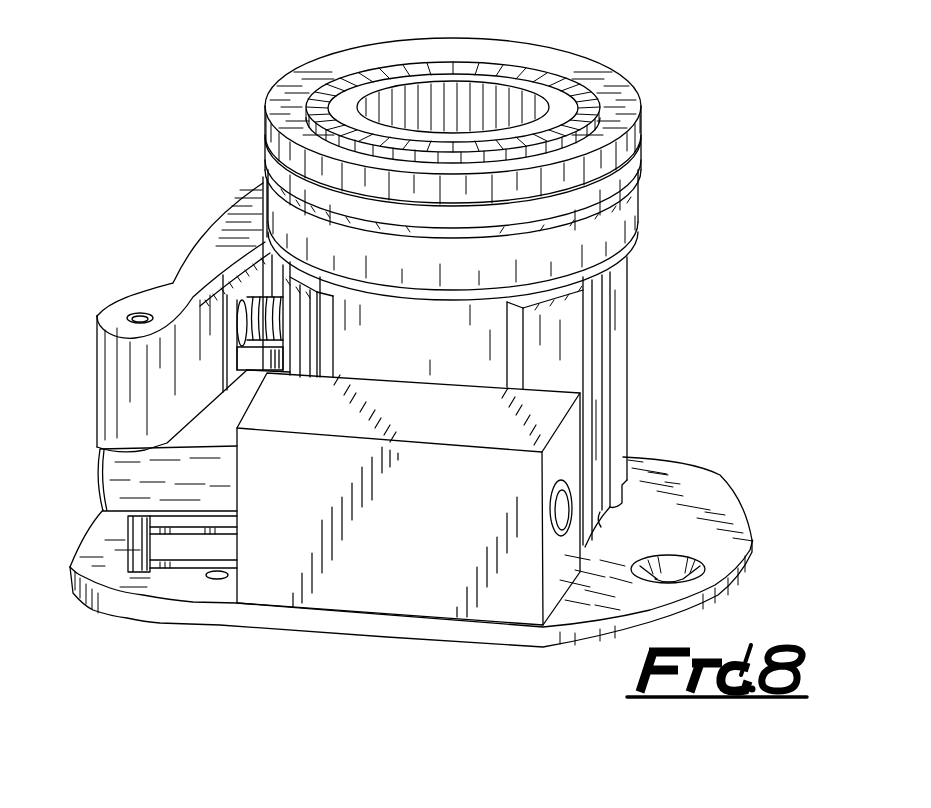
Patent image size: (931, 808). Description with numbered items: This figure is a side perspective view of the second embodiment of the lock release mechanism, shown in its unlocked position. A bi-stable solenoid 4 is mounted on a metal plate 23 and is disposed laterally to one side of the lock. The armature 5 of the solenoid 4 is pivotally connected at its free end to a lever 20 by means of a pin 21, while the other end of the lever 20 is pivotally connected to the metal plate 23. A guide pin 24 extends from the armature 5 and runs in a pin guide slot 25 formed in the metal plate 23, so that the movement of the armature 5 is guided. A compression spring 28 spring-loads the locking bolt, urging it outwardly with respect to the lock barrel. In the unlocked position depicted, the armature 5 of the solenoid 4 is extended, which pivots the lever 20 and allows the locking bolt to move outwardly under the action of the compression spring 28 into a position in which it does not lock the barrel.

The solenoid 4 is at (408, 533).
The armature 5 is at (147, 463).
The lever 20 is at (166, 317).
The pin 21 is at (107, 291).
The metal plate 23 is at (427, 524).
The guide pin 24 is at (111, 592).
The pin guide slot 25 is at (208, 628).
The compression spring 28 is at (243, 261).